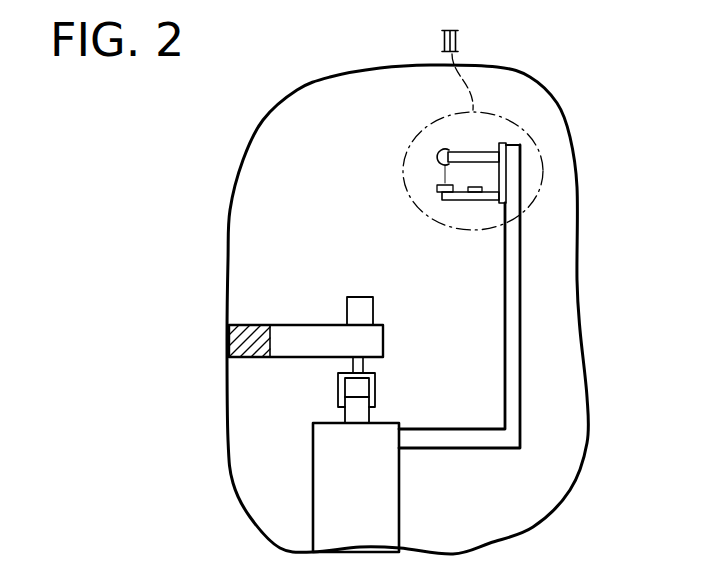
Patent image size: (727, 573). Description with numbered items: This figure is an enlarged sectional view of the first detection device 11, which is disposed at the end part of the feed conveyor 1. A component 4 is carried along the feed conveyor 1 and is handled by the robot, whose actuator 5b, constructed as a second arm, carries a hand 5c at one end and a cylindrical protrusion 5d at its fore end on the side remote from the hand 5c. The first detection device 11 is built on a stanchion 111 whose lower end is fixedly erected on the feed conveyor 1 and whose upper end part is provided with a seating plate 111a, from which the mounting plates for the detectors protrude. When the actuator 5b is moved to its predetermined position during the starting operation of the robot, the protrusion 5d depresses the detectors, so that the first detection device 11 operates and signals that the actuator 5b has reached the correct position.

The feed conveyor 1 is at (312, 512).
The component 4 is at (344, 413).
The actuator 5b is at (305, 323).
The hand 5c is at (376, 383).
The cylindrical protrusion 5d is at (374, 305).
The first detection device 11 is at (505, 207).
The stanchion 111 is at (520, 347).
The seating plate 111a is at (503, 143).